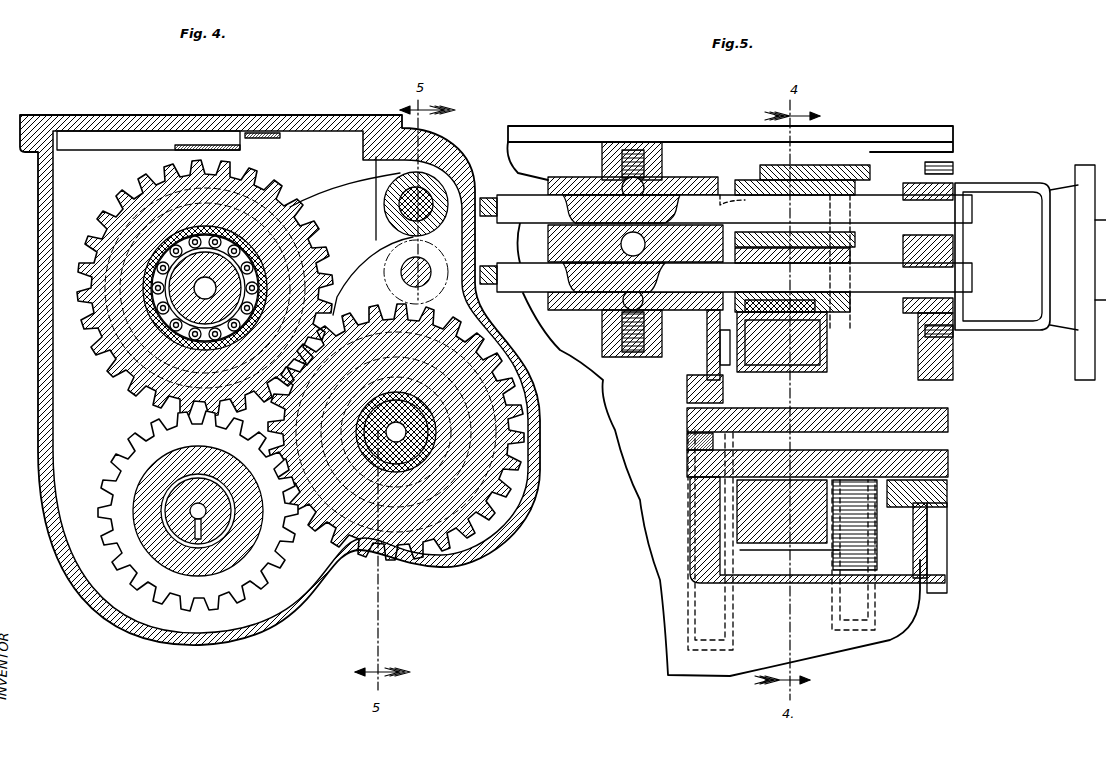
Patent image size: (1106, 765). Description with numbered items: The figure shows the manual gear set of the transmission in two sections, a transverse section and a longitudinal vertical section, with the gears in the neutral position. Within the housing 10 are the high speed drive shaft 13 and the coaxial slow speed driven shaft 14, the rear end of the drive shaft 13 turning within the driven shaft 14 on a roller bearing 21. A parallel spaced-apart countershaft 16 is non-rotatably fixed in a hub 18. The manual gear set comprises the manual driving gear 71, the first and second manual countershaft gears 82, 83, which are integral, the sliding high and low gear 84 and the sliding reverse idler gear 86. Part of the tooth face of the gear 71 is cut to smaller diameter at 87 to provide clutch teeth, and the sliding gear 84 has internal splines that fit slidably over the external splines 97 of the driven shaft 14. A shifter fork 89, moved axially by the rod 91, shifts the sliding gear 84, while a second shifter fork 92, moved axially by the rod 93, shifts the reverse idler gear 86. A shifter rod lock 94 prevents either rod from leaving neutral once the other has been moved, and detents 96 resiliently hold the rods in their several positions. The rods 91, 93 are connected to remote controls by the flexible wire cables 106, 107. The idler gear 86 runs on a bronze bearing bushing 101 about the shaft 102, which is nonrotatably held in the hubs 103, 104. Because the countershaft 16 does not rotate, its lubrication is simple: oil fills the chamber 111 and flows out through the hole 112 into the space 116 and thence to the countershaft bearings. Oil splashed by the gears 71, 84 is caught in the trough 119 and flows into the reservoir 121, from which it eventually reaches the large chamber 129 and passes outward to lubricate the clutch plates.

In FIG. 4, the housing 10 is at (40, 177).
In FIG. 5, the housing 10 is at (665, 540).
In FIG. 4, the high speed drive shaft 13 is at (318, 240).
In FIG. 4, the slow speed driven shaft 14 is at (205, 300).
In FIG. 4, the countershaft 16 is at (185, 525).
In FIG. 5, the hub 18 is at (935, 573).
In FIG. 4, the roller bearing 21 is at (152, 294).
In FIG. 5, the manual driving gear 71 is at (700, 190).
In FIG. 5, the first manual countershaft gear 82 is at (720, 650).
In FIG. 4, the second manual countershaft gear 83 is at (120, 455).
In FIG. 5, the second manual countershaft gear 83 is at (855, 625).
In FIG. 4, the sliding high and low gear 84 is at (282, 190).
In FIG. 5, the sliding high and low gear 84 is at (835, 176).
In FIG. 4, the sliding reverse idler gear 86 is at (330, 530).
In FIG. 5, the sliding reverse idler gear 86 is at (780, 550).
In FIG. 5, the clutch teeth 87 is at (760, 195).
In FIG. 4, the shifter fork 89 is at (362, 210).
In FIG. 5, the shifter fork 89 is at (870, 205).
In FIG. 4, the shifter rod 91 is at (405, 210).
In FIG. 5, the shifter rod 91 is at (955, 214).
In FIG. 4, the second shifter fork 92 is at (395, 293).
In FIG. 5, the second shifter fork 92 is at (735, 345).
In FIG. 4, the shifter rod 93 is at (400, 272).
In FIG. 5, the shifter rod 93 is at (955, 288).
In FIG. 5, the shifter rod lock 94 is at (633, 262).
In FIG. 5, the detent 96 is at (628, 185).
In FIG. 4, the external splines 97 is at (100, 237).
In FIG. 4, the bronze bearing bushing 101 is at (385, 360).
In FIG. 5, the bronze bearing bushing 101 is at (690, 486).
In FIG. 4, the shaft 102 is at (505, 395).
In FIG. 5, the shaft 102 is at (700, 418).
In FIG. 5, the hub 103 is at (690, 395).
In FIG. 5, the hub 104 is at (945, 490).
In FIG. 5, the flexible wire cable 106 is at (488, 196).
In FIG. 5, the flexible wire cable 107 is at (492, 286).
In FIG. 4, the chamber 111 is at (190, 507).
In FIG. 4, the hole 112 is at (210, 528).
In FIG. 4, the space 116 is at (240, 475).
In FIG. 4, the trough 119 is at (190, 140).
In FIG. 4, the reservoir 121 is at (115, 150).
In FIG. 4, the large chamber 129 is at (150, 385).